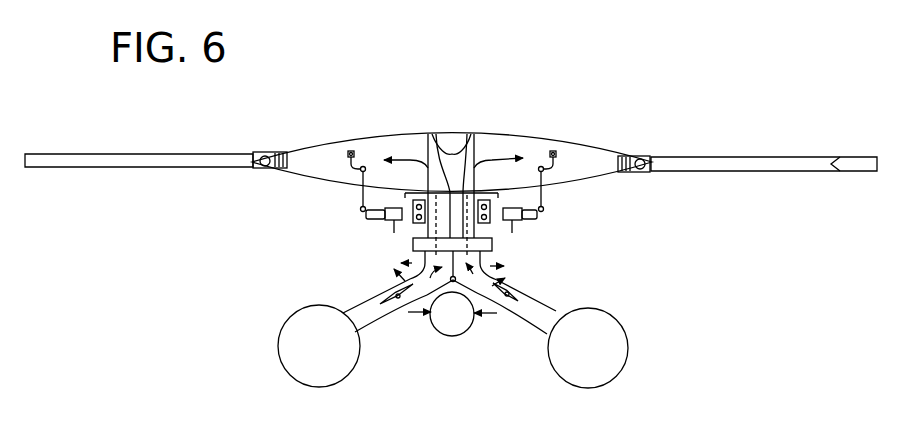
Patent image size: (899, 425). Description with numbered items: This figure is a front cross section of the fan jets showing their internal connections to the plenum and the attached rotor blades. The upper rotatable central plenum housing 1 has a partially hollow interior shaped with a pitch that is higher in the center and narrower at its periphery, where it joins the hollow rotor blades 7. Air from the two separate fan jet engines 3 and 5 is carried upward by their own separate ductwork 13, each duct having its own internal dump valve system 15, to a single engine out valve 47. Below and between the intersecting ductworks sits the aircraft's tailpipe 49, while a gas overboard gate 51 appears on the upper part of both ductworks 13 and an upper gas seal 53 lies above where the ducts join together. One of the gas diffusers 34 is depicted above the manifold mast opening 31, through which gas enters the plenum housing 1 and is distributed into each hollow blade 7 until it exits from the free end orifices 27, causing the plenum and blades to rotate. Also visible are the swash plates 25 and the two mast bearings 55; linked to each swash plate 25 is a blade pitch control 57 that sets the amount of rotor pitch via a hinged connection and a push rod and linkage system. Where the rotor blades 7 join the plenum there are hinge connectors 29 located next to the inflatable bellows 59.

The upper rotatable central plenum housing 1 is at (556, 133).
The fan-jet engine 3 is at (318, 375).
The fan-jet engine 5 is at (610, 347).
The hollow interior rotor blade 7 is at (118, 154).
The lower vertical ductwork segment 13 is at (360, 302).
The internal dump valve system 15 is at (413, 307).
The swash plate 25 is at (368, 216).
The free end orifice 27 is at (850, 157).
The hinged connection 29 is at (263, 152).
The manifold mast opening 31 is at (444, 145).
The gas diffuser 34 is at (494, 148).
The engine out valve 47 is at (481, 257).
The tailpipe 49 is at (451, 327).
The gas overboard gate 51 is at (513, 279).
The upper gas seal 53 is at (413, 245).
The mast bearing 55 is at (524, 214).
The blade pitch control 57 is at (356, 168).
The inflatable bellows 59 is at (282, 152).